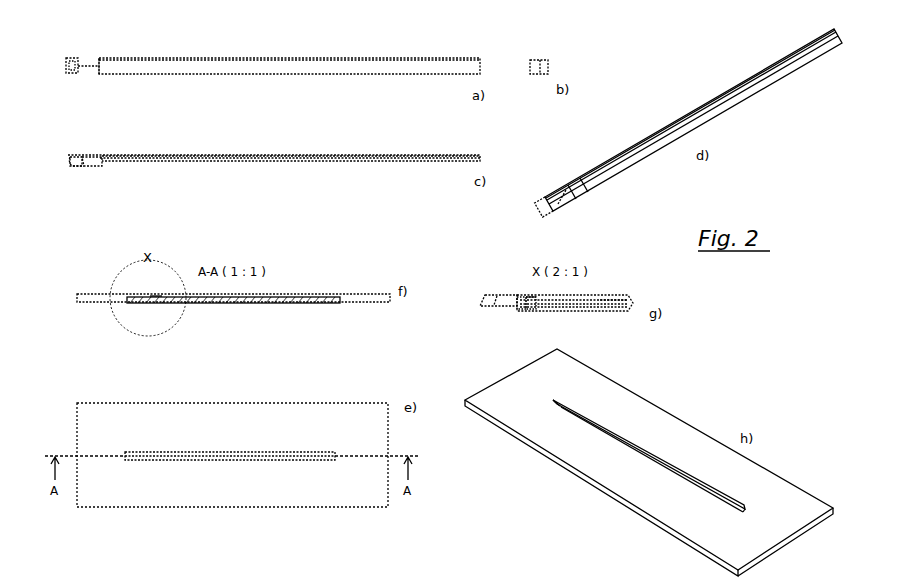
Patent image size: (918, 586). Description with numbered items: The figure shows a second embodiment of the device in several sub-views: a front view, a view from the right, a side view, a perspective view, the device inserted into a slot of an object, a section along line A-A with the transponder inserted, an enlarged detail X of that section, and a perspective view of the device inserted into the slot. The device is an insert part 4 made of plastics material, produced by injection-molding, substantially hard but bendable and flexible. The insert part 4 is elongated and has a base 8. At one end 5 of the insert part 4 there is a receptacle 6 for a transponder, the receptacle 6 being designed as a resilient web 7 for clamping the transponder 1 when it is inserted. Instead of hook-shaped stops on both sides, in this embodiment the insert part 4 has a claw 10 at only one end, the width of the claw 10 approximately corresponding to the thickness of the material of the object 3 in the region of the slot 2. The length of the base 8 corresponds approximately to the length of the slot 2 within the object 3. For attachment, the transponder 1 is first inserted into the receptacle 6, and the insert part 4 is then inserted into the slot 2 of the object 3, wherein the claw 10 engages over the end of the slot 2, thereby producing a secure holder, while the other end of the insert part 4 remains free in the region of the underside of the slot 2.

The transponder 1 is at (600, 300).
The slot 2 is at (262, 452).
The object 3 is at (366, 305).
The insert part 4 is at (270, 76).
The end 5 is at (99, 76).
The receptacle 6 is at (105, 165).
The resilient web 7 is at (84, 78).
The base 8 is at (216, 76).
The claw 10 is at (66, 70).